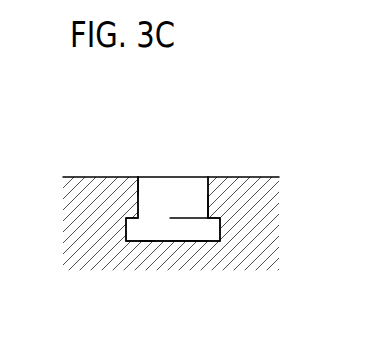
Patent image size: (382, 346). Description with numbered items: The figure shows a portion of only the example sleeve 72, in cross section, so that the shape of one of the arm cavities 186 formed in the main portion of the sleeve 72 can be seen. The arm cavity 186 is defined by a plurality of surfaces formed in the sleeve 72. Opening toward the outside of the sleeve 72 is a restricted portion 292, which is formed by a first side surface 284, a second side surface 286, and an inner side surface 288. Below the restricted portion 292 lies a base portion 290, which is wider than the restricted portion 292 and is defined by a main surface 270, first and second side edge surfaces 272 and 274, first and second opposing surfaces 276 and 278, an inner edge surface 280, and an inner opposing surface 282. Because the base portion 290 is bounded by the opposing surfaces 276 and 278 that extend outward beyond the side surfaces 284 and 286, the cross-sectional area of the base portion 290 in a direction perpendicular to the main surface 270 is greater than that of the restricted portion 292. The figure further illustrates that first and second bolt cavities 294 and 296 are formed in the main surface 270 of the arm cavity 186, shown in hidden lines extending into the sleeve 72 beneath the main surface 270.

The sleeve 72 is at (78, 178).
The arm cavities 186 is at (172, 176).
The restricted portion 292 is at (155, 176).
The first side surface 284 is at (138, 192).
The inner side surface 288 is at (186, 197).
The inner opposing surface 282 is at (193, 200).
The second side surface 286 is at (208, 182).
The first opposing surface 276 is at (126, 220).
The second opposing surface 278 is at (220, 222).
The first side edge surface 272 is at (129, 243).
The second side edge surface 274 is at (214, 243).
The first bolt cavity 294 is at (148, 248).
The second bolt cavity 296 is at (200, 248).
The main surface 270 is at (161, 241).
The inner edge surface 280 is at (185, 241).
The base portion 290 is at (187, 240).